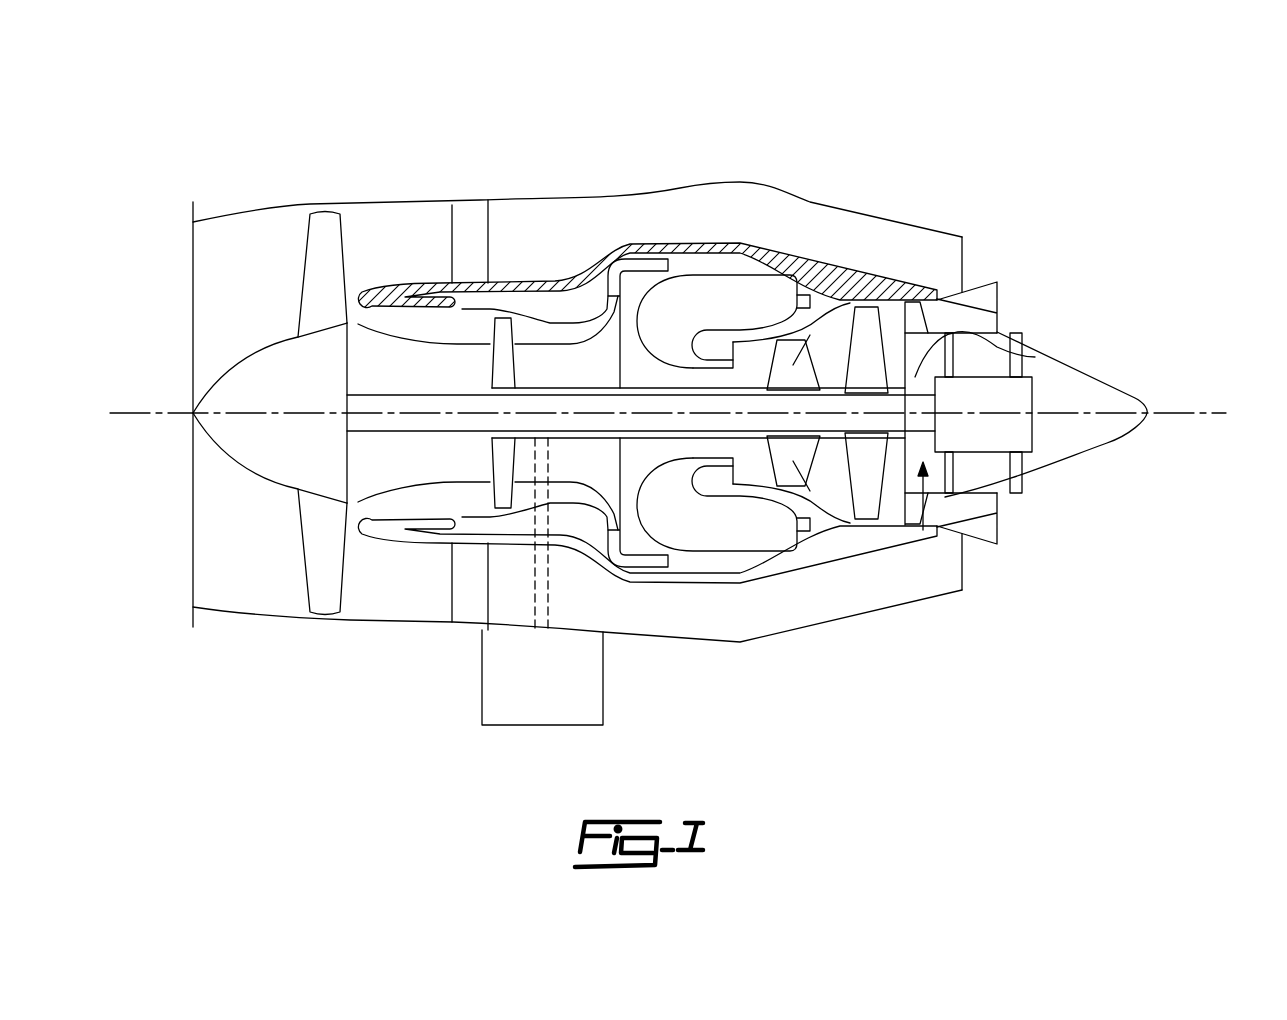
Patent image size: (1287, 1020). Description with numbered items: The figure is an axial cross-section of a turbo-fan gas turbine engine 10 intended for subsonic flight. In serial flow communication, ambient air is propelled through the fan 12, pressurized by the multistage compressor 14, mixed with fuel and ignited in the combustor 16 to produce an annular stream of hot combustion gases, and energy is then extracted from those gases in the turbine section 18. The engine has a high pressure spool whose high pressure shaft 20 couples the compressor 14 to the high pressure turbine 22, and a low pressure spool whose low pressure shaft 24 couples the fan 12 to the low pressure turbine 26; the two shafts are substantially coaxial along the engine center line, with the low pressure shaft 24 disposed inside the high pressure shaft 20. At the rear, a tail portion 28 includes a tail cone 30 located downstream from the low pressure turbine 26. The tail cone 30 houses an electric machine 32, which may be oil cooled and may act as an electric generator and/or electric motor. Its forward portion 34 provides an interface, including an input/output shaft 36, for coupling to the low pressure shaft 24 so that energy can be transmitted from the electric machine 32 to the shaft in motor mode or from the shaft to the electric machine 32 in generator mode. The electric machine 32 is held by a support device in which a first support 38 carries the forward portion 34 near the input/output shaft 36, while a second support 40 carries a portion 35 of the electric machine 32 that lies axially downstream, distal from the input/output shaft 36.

The gas turbine engine 10 is at (850, 140).
The fan 12 is at (318, 543).
The multistage compressor 14 is at (555, 337).
The combustor 16 is at (718, 293).
The turbine section 18 is at (832, 470).
The high pressure shaft 20 is at (635, 388).
The high pressure turbine 22 is at (833, 295).
The low pressure shaft 24 is at (407, 432).
The low pressure turbine 26 is at (867, 478).
The tail portion 28 is at (1027, 543).
The tail cone 30 is at (1090, 368).
The electric machine 32 is at (1033, 425).
The forward portion 34 is at (923, 530).
The portion of electric machine 35 is at (1040, 467).
The input/output shaft 36 is at (928, 353).
The first support 38 is at (997, 327).
The second support 40 is at (1020, 360).